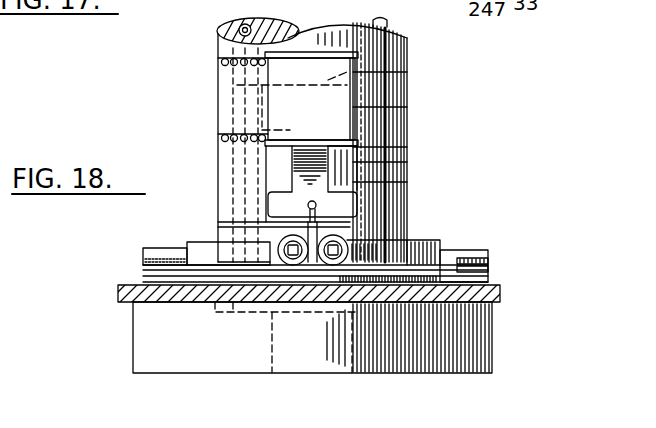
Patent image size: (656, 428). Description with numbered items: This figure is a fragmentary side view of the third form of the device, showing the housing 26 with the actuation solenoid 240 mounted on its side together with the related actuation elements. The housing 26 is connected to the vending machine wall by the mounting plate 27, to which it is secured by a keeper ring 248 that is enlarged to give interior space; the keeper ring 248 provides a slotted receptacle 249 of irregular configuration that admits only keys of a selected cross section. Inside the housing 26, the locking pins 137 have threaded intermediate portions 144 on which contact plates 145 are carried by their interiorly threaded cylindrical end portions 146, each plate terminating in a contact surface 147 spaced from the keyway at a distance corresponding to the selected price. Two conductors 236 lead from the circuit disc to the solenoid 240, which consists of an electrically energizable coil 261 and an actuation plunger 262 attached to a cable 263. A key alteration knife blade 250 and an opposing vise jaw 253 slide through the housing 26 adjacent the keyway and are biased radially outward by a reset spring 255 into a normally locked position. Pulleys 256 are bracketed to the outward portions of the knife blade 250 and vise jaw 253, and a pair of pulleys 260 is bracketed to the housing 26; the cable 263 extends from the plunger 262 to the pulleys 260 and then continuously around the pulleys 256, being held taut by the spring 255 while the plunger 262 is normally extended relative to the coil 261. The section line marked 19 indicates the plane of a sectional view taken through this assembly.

The locking pins 137 is at (246, 27).
The conductors 236 is at (224, 138).
The actuation solenoid 240 is at (313, 52).
The cylindrical end portions 146 is at (271, 84).
The coil 261 is at (329, 119).
The contact plate 145 is at (412, 72).
The housing 26 is at (403, 147).
The intermediate portions 144 is at (408, 162).
The contact surface 147 is at (412, 182).
The actuation plunger 262 is at (292, 150).
The pulleys 260 is at (300, 267).
The cable 263 is at (232, 262).
The section line 19- 19 is at (109, 250).
The key alteration knife blade 250 is at (210, 280).
The pulleys 256 is at (143, 268).
The reset spring 255 is at (440, 242).
The vise jaw 253 is at (413, 282).
The mounting plate 27 is at (125, 300).
The keeper ring 248 is at (492, 342).
The slotted receptacle 249 is at (285, 352).